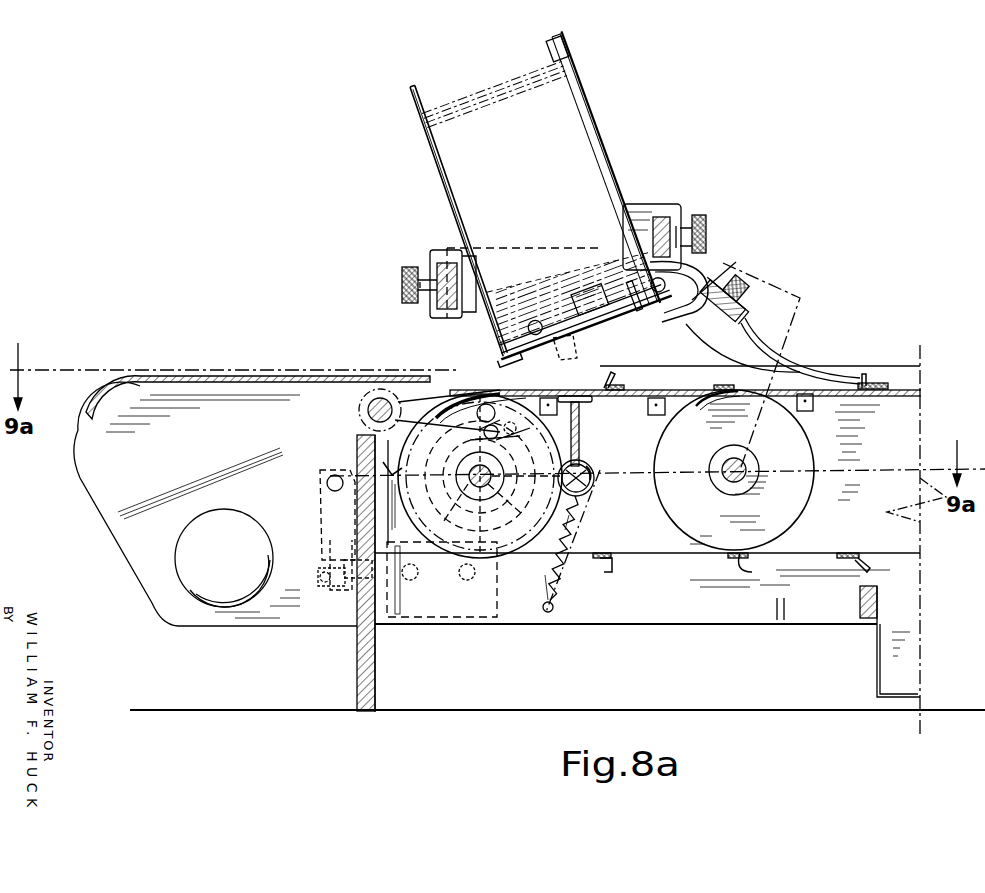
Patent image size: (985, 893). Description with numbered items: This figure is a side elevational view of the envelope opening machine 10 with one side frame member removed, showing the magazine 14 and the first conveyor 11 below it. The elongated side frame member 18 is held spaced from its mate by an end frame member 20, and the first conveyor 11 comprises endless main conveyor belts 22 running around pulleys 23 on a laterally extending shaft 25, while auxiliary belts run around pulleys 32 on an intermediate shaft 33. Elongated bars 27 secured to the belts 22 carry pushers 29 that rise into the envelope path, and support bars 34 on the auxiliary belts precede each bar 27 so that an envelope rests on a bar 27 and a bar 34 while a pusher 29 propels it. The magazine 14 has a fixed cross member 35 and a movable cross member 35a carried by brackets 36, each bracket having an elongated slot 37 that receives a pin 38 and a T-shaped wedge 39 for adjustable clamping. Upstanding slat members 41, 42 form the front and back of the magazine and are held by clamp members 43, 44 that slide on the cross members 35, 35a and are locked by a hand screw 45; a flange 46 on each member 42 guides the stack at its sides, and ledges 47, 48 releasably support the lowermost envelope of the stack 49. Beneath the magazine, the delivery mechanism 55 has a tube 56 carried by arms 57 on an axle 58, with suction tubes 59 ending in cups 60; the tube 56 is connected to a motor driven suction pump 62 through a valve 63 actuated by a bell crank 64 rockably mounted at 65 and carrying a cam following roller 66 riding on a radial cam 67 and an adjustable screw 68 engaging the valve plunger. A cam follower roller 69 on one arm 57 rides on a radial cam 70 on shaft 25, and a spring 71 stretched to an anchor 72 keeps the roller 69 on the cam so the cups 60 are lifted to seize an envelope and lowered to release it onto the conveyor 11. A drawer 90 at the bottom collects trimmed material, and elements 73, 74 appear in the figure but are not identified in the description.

The envelope opening machine 10 is at (870, 280).
The first conveyor 11 is at (808, 566).
The magazine 14 is at (625, 155).
The side frame member 18 is at (108, 480).
The end frame member 20 is at (357, 640).
The main conveyor belts 22 is at (692, 560).
The pulleys 23 is at (412, 516).
The shaft 25 is at (468, 478).
The elongated bars 27 is at (642, 380).
The pushers 29 is at (604, 381).
The pulleys 32 is at (805, 500).
The shaft 33 is at (745, 487).
The support bars 34 is at (720, 388).
The fixed cross member 35 is at (453, 305).
The movable cross member 35a is at (662, 214).
The brackets 36 is at (688, 312).
The elongated slot 37 is at (713, 275).
The pin 38 is at (536, 334).
The T-shaped wedge 39 is at (602, 314).
The upstanding slat members 41 is at (409, 103).
The upstanding slat members 42 is at (598, 116).
The clamp members 43 is at (436, 258).
The clamp members 44 is at (684, 208).
The hand screw 45 is at (402, 283).
The flange 46 is at (546, 50).
The ledges 47 is at (503, 360).
The ledges 48 is at (637, 312).
The stack of envelopes 49 is at (487, 96).
The delivery mechanism 55 is at (589, 463).
The tube 56 is at (590, 487).
The arms 57 is at (384, 397).
The axle 58 is at (368, 410).
The suction tubes 59 is at (580, 440).
The cups 60 is at (591, 401).
The motor driven suction pump 62 is at (200, 582).
The valve 63 is at (432, 620).
The bell crank 64 is at (324, 545).
The rockable mounting 65 is at (327, 484).
The cam following roller 66 is at (497, 412).
The radial cam 67 is at (500, 500).
The adjustable screw 68 is at (330, 586).
The cam follower roller 69 is at (505, 394).
The radial cam 70 is at (450, 508).
The spring 71 is at (575, 531).
The anchor 72 is at (555, 607).
The cable 73 is at (786, 362).
The adjusting screw 74 is at (730, 322).
The drawer 90 is at (877, 652).